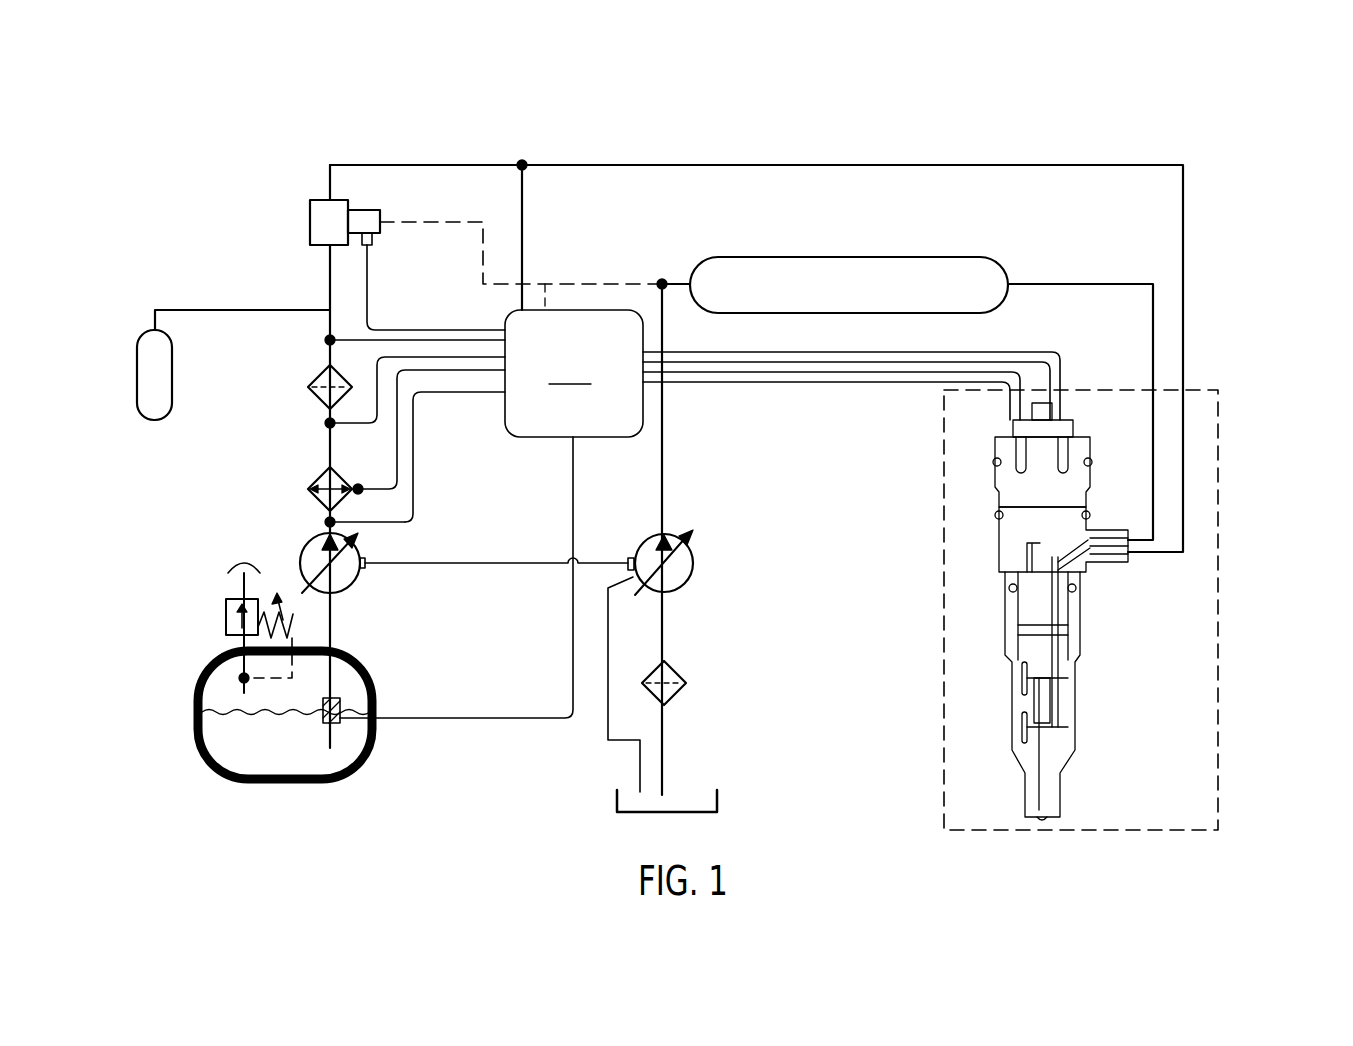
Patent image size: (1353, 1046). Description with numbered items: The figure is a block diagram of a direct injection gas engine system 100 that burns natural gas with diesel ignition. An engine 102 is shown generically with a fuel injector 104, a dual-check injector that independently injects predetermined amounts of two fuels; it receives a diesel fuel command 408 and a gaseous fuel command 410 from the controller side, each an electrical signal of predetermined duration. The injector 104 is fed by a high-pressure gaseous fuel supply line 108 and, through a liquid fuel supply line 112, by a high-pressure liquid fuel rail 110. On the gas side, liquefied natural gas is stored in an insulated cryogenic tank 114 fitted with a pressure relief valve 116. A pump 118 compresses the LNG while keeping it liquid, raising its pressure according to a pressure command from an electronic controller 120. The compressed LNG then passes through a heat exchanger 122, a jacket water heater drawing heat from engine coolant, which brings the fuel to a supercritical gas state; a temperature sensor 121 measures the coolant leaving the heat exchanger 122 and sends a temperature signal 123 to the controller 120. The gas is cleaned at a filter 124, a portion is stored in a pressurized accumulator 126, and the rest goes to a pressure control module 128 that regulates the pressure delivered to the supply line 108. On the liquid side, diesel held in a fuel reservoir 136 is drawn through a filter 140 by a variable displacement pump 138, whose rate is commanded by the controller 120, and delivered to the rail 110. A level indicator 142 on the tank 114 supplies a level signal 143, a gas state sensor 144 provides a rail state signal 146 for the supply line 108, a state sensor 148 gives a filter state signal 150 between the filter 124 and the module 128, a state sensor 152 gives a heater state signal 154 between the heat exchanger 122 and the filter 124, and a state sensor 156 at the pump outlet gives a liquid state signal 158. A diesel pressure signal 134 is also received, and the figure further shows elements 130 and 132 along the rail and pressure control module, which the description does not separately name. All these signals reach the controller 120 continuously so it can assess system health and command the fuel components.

The DIG engine system 100 is at (1216, 148).
The engine 102 is at (1122, 830).
The fuel injector 104 is at (1100, 661).
The gaseous fuel supply line 108 is at (1183, 217).
The liquid fuel rail 110 is at (1005, 262).
The liquid fuel supply line 112 is at (1080, 284).
The cryogenic tank 114 is at (277, 786).
The pressure relief valve 116 is at (208, 611).
The pump 118 is at (352, 585).
The electronic controller 120 is at (574, 373).
The temperature sensor 121 is at (363, 490).
The heat exchanger 122 is at (318, 480).
The temperature signal 123 is at (396, 455).
The filter 124 is at (310, 385).
The pressurized accumulator 126 is at (137, 340).
The pressure control module 128 is at (310, 222).
The junction 130 is at (665, 280).
The sensor 132 is at (368, 210).
The diesel pressure signal 134 is at (555, 284).
The fuel reservoir 136 is at (685, 790).
The variable displacement pump 138 is at (693, 575).
The filter 140 is at (678, 670).
The level indicator 142 is at (340, 700).
The level signal 143 is at (435, 718).
The gas state sensor 144 is at (522, 160).
The rail state signal 146 is at (523, 200).
The state sensor 148 is at (326, 340).
The filter state signal 150 is at (357, 338).
The state sensor 152 is at (326, 423).
The heater state signal 154 is at (376, 387).
The state sensor 156 is at (326, 522).
The liquid state signal 158 is at (416, 502).
The diesel fuel command 408 is at (823, 383).
The gaseous fuel command 410 is at (880, 352).